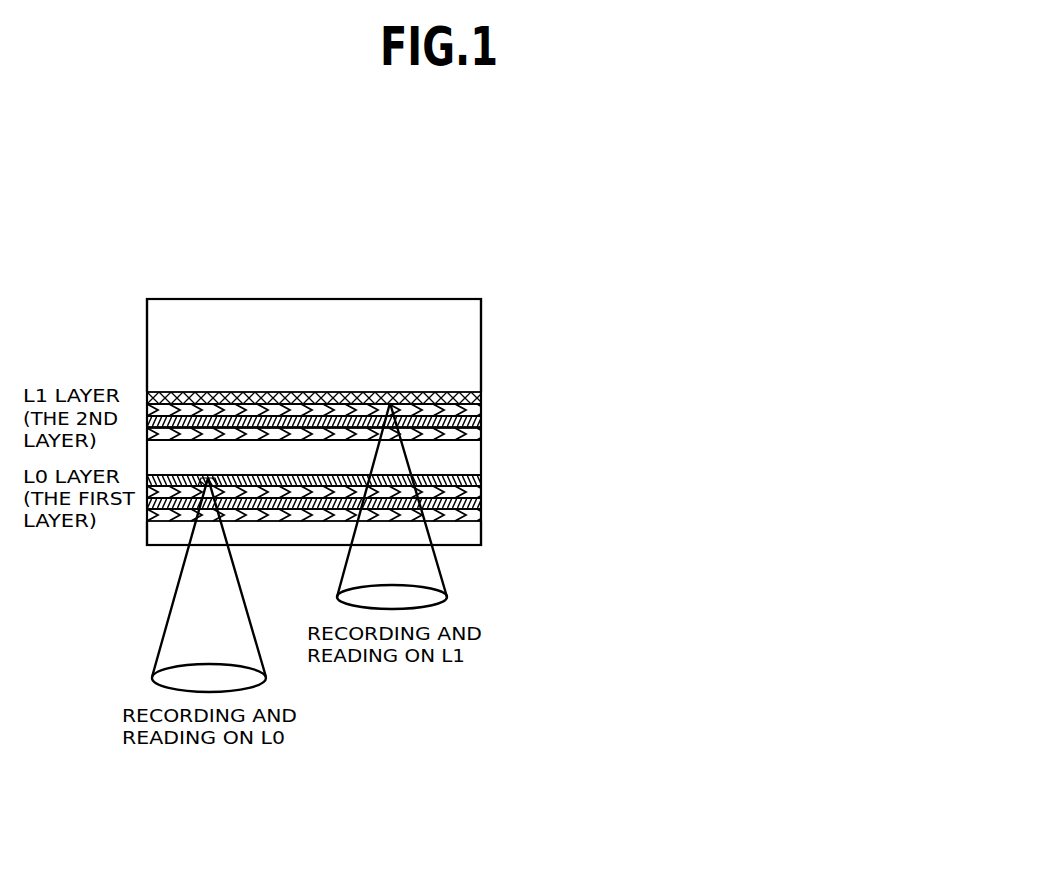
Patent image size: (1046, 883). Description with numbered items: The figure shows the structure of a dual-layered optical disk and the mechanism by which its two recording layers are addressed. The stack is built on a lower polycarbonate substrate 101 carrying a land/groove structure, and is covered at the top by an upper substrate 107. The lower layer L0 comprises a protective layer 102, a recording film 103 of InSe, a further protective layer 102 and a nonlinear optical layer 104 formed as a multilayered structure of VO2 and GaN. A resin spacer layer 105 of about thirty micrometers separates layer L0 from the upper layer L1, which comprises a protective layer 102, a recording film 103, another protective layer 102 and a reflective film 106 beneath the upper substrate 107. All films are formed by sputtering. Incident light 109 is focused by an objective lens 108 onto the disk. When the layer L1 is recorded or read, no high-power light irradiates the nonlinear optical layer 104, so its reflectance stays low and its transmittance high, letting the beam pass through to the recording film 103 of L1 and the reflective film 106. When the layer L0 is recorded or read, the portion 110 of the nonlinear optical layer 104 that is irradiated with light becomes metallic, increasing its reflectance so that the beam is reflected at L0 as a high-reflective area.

The lower substrate 101 is at (475, 532).
The protective layer 102 is at (483, 408).
The recording film 103 is at (483, 422).
The nonlinear optical layer 104 is at (483, 479).
The spacer layer 105 is at (475, 460).
The reflective film 106 is at (483, 393).
The upper substrate 107 is at (468, 350).
The objective lens 108 is at (430, 602).
The incident light 109 is at (432, 568).
The portion irradiated with light 110 is at (202, 482).